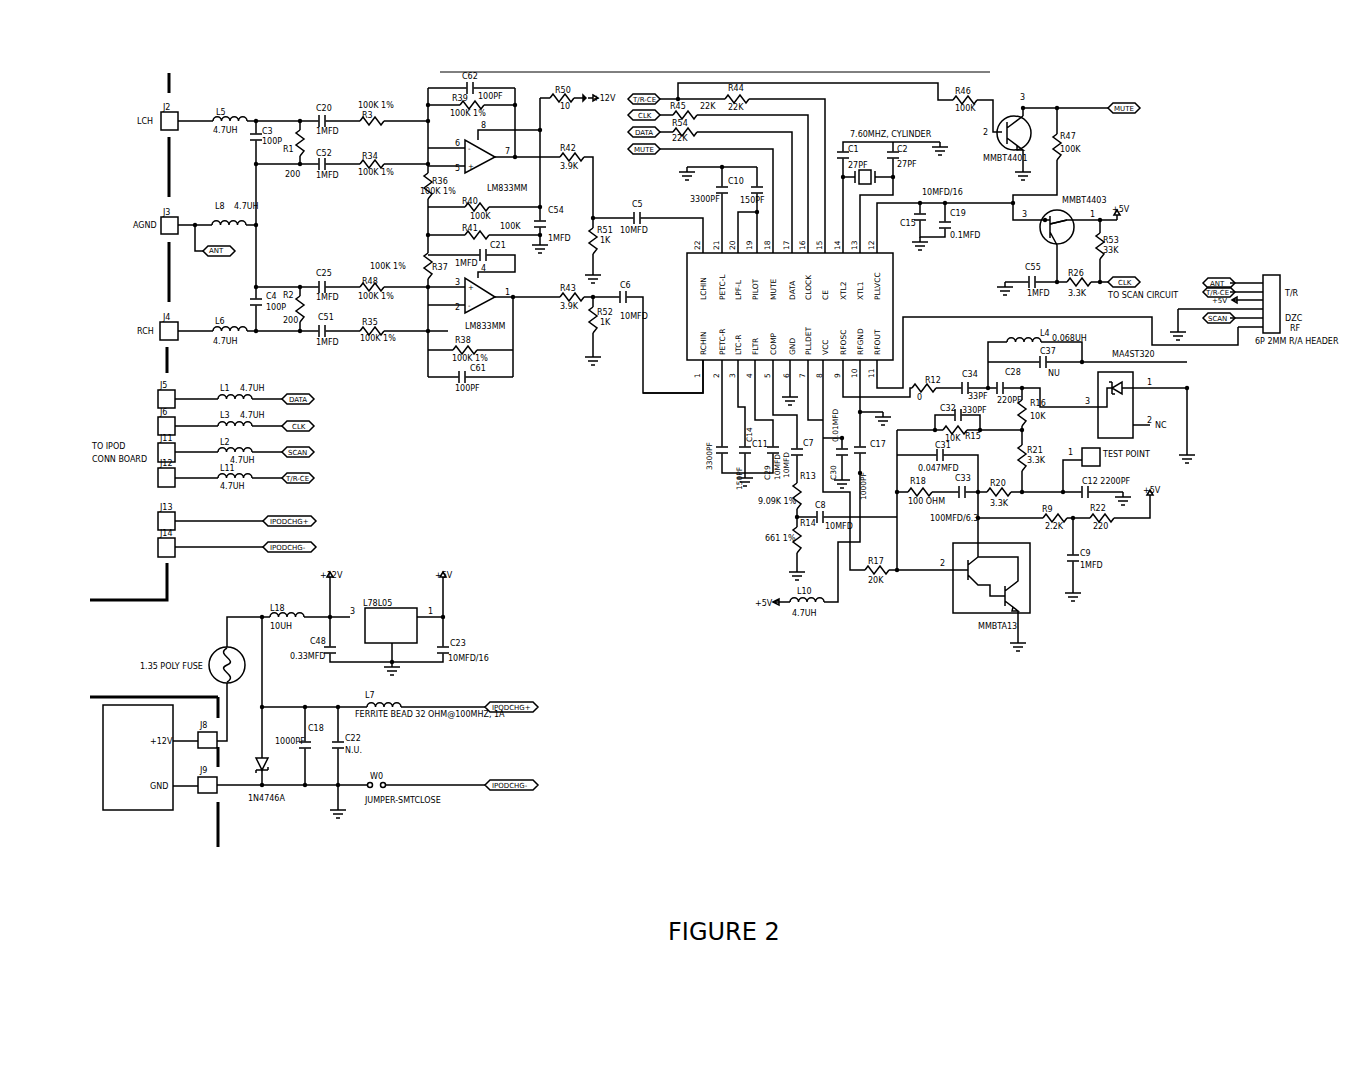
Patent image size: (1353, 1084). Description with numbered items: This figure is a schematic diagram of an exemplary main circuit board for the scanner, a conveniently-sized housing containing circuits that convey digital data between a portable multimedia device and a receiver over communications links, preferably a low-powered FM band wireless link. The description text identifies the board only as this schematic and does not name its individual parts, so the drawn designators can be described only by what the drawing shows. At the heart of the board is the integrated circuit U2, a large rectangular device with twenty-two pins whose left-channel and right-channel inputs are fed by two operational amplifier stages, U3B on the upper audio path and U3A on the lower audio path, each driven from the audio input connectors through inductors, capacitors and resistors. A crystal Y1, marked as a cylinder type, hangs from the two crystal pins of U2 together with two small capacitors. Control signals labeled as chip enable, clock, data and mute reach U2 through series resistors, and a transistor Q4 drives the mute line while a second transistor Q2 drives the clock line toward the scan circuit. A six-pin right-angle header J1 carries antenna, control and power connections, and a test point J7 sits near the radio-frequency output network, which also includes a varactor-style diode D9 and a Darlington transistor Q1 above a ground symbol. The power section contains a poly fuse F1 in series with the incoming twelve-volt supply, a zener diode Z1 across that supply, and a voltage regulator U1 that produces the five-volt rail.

The BH1415F FM stereo transmitter IC U2 is at (790, 306).
The LM833MM operational amplifier (right channel) U3A is at (480, 299).
The LM833MM operational amplifier (left channel) U3B is at (480, 161).
The MMBT4401 transistor (mute) Q4 is at (1020, 132).
The MMBT4403 transistor (clock / scan) Q2 is at (1057, 224).
The MMBTA13 Darlington transistor Q1 is at (1002, 578).
The MA4ST320 varactor diode D9 is at (1123, 405).
The 6-pin 2mm right-angle header J1 is at (1271, 298).
The test point J7 is at (1091, 451).
The 7.60 MHz cylinder crystal Y1 is at (866, 172).
The L78L05 voltage regulator U1 is at (391, 616).
The 1.35 A poly fuse F1 is at (226, 661).
The 1N4746A zener diode Z1 is at (269, 760).